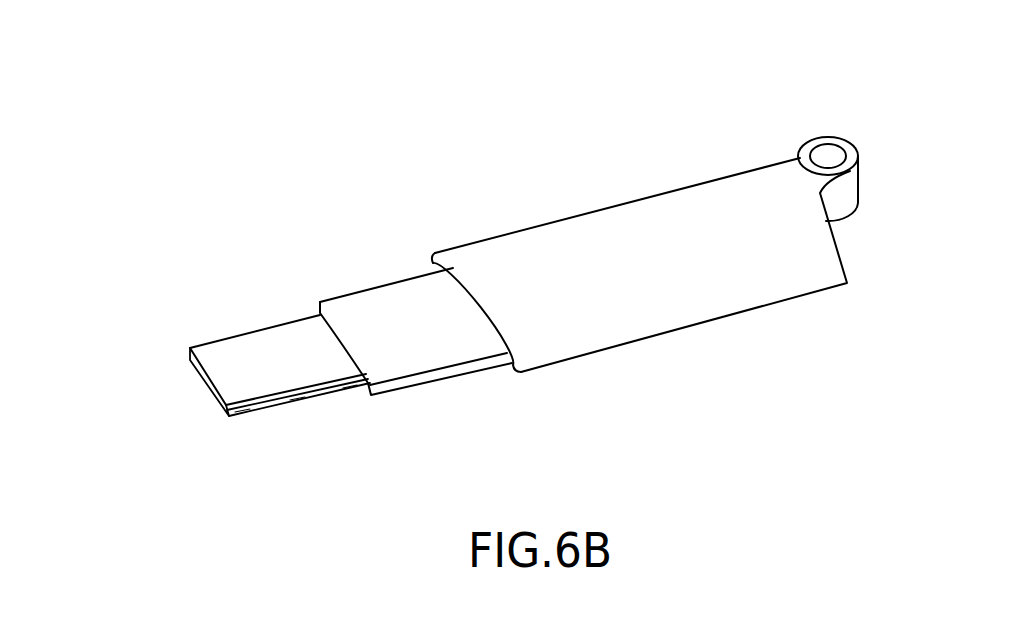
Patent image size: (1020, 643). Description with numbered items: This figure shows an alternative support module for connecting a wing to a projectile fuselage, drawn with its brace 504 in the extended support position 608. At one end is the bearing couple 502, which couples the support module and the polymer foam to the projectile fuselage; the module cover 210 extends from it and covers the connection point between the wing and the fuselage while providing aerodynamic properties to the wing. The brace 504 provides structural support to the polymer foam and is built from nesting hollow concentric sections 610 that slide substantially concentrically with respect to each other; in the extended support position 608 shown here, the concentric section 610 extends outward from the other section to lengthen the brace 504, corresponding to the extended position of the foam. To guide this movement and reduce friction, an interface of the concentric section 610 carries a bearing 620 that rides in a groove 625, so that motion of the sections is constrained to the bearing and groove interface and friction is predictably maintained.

The module cover 210 is at (755, 244).
The bearing couple 502 is at (831, 156).
The brace 504 is at (425, 226).
The extended support position 608 is at (156, 511).
The concentric section 610 is at (428, 358).
The bearing 620 is at (343, 385).
The groove 625 is at (252, 408).